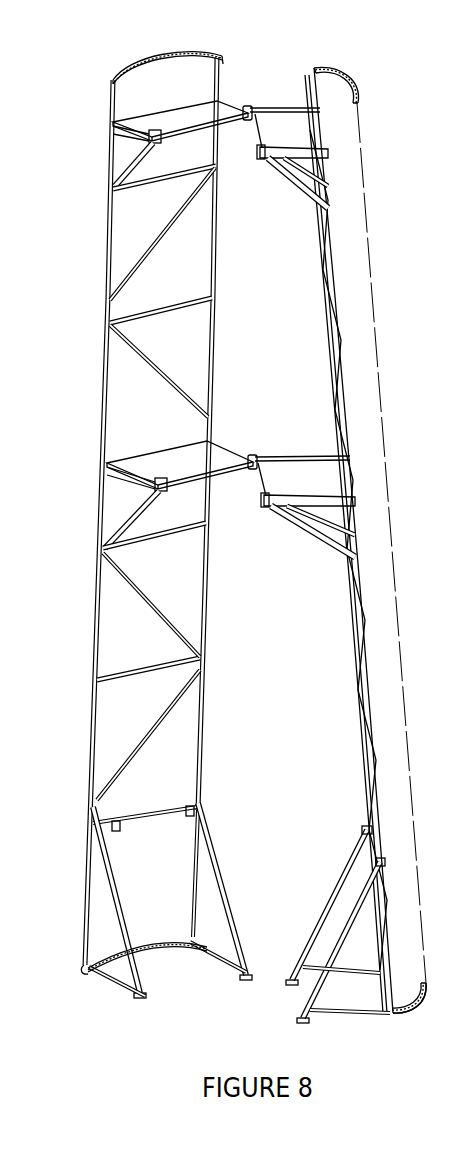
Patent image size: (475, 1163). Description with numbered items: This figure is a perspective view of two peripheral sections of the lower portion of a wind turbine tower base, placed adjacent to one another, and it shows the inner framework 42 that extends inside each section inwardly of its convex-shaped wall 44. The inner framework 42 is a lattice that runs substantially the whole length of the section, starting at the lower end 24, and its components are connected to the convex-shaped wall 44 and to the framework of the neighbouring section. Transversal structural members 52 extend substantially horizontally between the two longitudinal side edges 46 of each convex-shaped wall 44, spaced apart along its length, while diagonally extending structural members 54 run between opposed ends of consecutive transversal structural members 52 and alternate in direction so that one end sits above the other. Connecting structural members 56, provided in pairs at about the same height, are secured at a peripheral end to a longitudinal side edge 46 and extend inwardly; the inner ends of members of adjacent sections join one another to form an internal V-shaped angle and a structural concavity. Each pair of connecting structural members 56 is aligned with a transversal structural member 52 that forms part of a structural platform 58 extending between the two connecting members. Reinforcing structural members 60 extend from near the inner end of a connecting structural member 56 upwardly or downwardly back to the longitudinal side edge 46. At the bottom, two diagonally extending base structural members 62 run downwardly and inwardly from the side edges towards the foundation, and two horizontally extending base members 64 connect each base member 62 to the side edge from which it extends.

The lower end 24 is at (83, 975).
The inner framework 42 is at (132, 409).
The convex-shaped wall 44 is at (168, 78).
The longitudinal side edge 46 is at (313, 85).
The transversal structural member 52 is at (157, 178).
The diagonally extending structural member 54 is at (143, 265).
The connecting structural member 56 is at (128, 135).
The structural platform 58 is at (185, 118).
The reinforcing structural member 60 is at (128, 162).
The diagonally extending base structural member 62 is at (330, 890).
The horizontally extending base member 64 is at (112, 980).